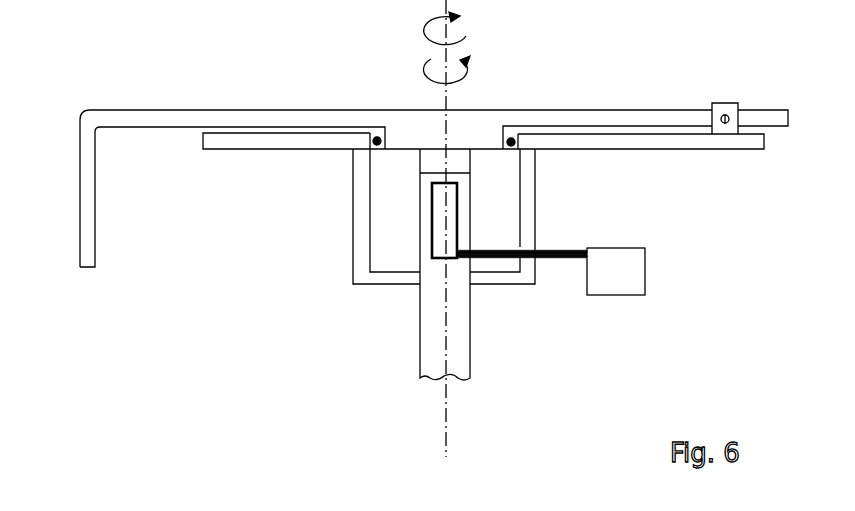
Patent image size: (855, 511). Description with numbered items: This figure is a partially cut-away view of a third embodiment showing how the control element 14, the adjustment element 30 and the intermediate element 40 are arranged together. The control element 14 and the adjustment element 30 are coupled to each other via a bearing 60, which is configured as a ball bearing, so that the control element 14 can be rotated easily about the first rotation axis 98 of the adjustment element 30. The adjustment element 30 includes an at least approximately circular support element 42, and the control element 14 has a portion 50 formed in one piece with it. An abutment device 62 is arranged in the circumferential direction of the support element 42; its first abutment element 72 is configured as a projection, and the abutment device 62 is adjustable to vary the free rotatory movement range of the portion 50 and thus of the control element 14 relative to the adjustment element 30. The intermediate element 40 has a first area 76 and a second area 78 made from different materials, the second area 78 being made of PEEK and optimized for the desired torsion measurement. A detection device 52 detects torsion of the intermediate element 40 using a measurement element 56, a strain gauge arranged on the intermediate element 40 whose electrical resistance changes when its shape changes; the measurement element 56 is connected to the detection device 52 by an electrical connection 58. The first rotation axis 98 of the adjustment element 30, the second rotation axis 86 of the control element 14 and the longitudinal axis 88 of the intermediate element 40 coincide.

The control element 14 is at (167, 100).
The adjustment element 30 is at (309, 202).
The intermediate element 40 is at (498, 205).
The support element 42 is at (638, 138).
The portion 50 is at (697, 115).
The detection device 52 is at (616, 271).
The measurement element 56 is at (440, 242).
The electrical connection 58 is at (562, 259).
The bearing 60 is at (375, 136).
The abutment device 62 is at (718, 160).
The first abutment element 72 is at (727, 127).
The first area 76 is at (460, 172).
The second area 78 is at (462, 235).
The second rotation axis 86 is at (447, 400).
The longitudinal axis 88 is at (480, 408).
The first rotation axis 98 is at (480, 408).